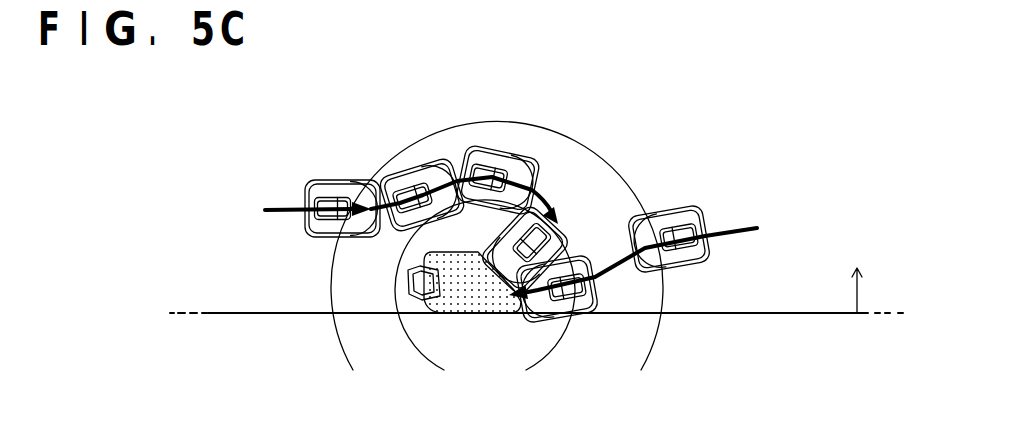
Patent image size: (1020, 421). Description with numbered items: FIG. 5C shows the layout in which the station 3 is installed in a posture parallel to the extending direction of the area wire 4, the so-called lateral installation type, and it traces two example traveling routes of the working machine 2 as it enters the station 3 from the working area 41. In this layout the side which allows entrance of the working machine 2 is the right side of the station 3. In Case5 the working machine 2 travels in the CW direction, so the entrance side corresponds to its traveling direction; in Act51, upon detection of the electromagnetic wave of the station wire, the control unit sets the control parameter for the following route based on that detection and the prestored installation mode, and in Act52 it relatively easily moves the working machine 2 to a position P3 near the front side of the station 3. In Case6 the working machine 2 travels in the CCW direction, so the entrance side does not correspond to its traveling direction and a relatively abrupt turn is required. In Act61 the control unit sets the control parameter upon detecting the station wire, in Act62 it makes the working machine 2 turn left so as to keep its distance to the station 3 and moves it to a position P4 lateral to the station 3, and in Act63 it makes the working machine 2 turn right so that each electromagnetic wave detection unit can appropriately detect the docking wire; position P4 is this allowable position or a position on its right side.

The working machine 2 is at (318, 182).
The station 3 is at (478, 317).
The area wire 4 is at (797, 314).
The working area 41 is at (906, 288).
The element Act61 is at (350, 195).
The element Act62 is at (424, 185).
The element Act63 is at (553, 190).
The element Act51 is at (660, 226).
The element Act52 is at (620, 300).
The element Case5 is at (684, 254).
The element Case6 is at (367, 200).
The position P3 is at (552, 293).
The position P4 is at (533, 188).